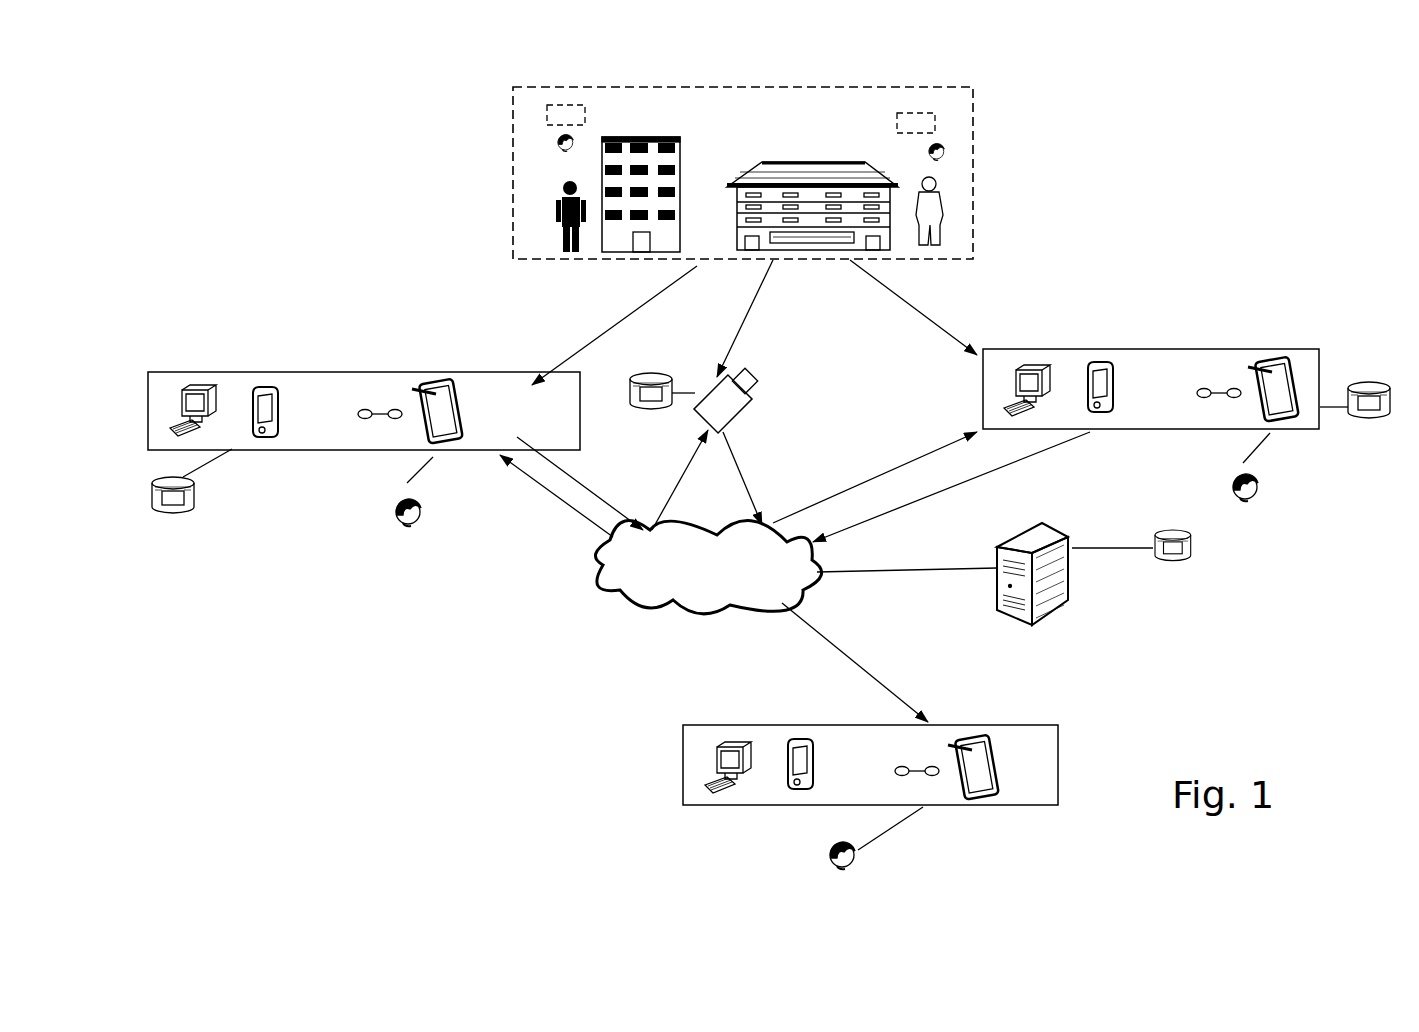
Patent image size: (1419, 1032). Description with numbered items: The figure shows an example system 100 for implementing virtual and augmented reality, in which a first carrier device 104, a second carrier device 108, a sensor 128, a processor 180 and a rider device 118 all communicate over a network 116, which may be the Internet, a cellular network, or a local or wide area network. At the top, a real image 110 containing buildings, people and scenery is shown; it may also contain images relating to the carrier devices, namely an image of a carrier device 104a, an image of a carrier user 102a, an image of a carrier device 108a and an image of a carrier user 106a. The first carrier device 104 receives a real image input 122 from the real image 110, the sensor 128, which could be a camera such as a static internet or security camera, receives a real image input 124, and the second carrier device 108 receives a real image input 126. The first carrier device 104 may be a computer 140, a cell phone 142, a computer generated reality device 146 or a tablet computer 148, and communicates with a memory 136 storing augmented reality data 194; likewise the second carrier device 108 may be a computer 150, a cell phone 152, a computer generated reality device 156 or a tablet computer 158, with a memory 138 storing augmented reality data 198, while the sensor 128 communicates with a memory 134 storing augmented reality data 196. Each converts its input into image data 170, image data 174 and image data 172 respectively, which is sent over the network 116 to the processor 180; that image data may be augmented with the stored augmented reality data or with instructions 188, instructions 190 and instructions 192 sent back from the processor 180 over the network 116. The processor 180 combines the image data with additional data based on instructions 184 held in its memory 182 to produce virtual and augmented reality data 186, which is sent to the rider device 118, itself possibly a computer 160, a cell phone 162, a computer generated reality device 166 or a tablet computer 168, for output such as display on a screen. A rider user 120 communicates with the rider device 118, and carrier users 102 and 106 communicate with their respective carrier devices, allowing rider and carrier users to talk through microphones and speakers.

The system 100 is at (273, 215).
The carrier user 102 is at (387, 498).
The image of carrier user 102a is at (563, 150).
The first carrier device 104 is at (492, 360).
The image of carrier device 104a is at (572, 104).
The carrier user 106 is at (1227, 480).
The image of carrier user 106a is at (927, 150).
The second carrier device 108 is at (1312, 340).
The image of carrier device 108a is at (920, 112).
The real image 110 is at (508, 192).
The network 116 is at (642, 605).
The rider device 118 is at (683, 762).
The rider user 120 is at (827, 872).
The real image input 122 is at (583, 332).
The real image input 124 is at (757, 327).
The real image input 126 is at (905, 323).
The sensor 128 is at (752, 397).
The memory 134 is at (632, 392).
The memory 136 is at (175, 507).
The memory 138 is at (1365, 420).
The computer 140 is at (190, 385).
The cell phone 142 is at (273, 380).
The computer generated reality device 146 is at (387, 408).
The tablet computer 148 is at (428, 375).
The computer 150 is at (1025, 367).
The cell phone 152 is at (1108, 357).
The computer generated reality device 156 is at (1220, 383).
The tablet computer 158 is at (1265, 352).
The computer 160 is at (725, 738).
The cell phone 162 is at (808, 733).
The computer generated reality device 166 is at (922, 765).
The tablet computer 168 is at (967, 732).
The image data 170 is at (593, 478).
The image data 172 is at (978, 483).
The image data 174 is at (755, 478).
The processor 180 is at (1045, 613).
The memory 182 is at (1167, 565).
The instructions 184 is at (1182, 550).
The virtual and augmented reality data 186 is at (880, 658).
The instructions 188 is at (552, 503).
The instructions 190 is at (670, 477).
The instructions 192 is at (880, 465).
The augmented reality data 194 is at (187, 498).
The augmented reality data 196 is at (647, 402).
The augmented reality data 198 is at (1373, 417).